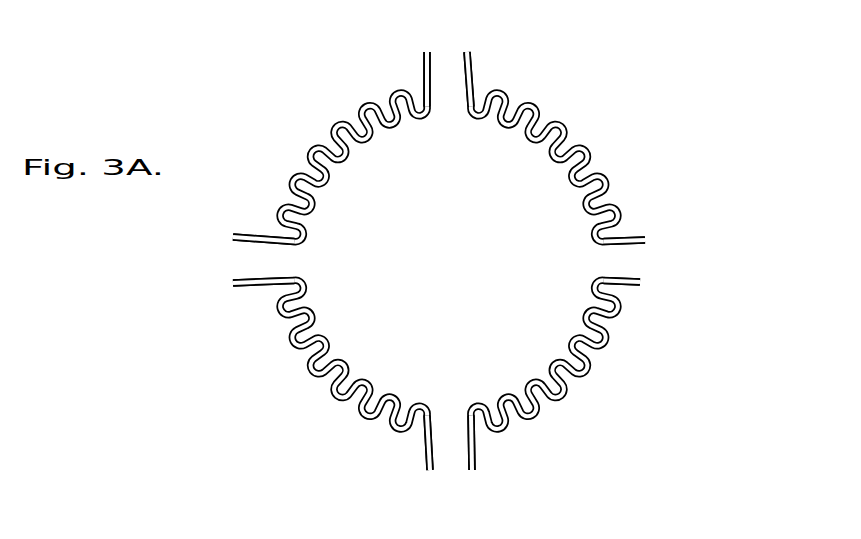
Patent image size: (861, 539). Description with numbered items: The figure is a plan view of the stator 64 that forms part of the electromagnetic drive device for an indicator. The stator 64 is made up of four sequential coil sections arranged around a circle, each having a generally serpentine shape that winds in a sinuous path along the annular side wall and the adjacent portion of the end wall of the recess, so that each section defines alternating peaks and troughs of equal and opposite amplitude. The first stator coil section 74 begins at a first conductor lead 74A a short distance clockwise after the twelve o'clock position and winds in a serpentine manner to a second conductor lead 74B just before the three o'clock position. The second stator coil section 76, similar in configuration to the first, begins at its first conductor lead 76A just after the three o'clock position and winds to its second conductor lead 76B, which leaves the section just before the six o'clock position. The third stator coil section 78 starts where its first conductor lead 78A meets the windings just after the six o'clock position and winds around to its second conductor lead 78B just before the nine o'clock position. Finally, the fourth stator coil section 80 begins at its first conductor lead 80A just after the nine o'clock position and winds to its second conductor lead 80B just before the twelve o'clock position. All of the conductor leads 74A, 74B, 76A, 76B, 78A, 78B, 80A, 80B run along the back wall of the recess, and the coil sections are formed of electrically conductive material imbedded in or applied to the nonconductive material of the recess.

The stator 64 is at (474, 253).
The first stator coil section 74 is at (560, 120).
The first conductor lead 74A is at (472, 73).
The second conductor lead 74B is at (632, 238).
The second stator coil section 76 is at (588, 370).
The first conductor lead 76A is at (632, 287).
The second conductor lead 76B is at (475, 455).
The third stator coil section 78 is at (308, 372).
The first conductor lead 78A is at (427, 452).
The second conductor lead 78B is at (260, 287).
The fourth stator coil section 80 is at (337, 120).
The first conductor lead 80A is at (258, 236).
The second conductor lead 80B is at (424, 63).